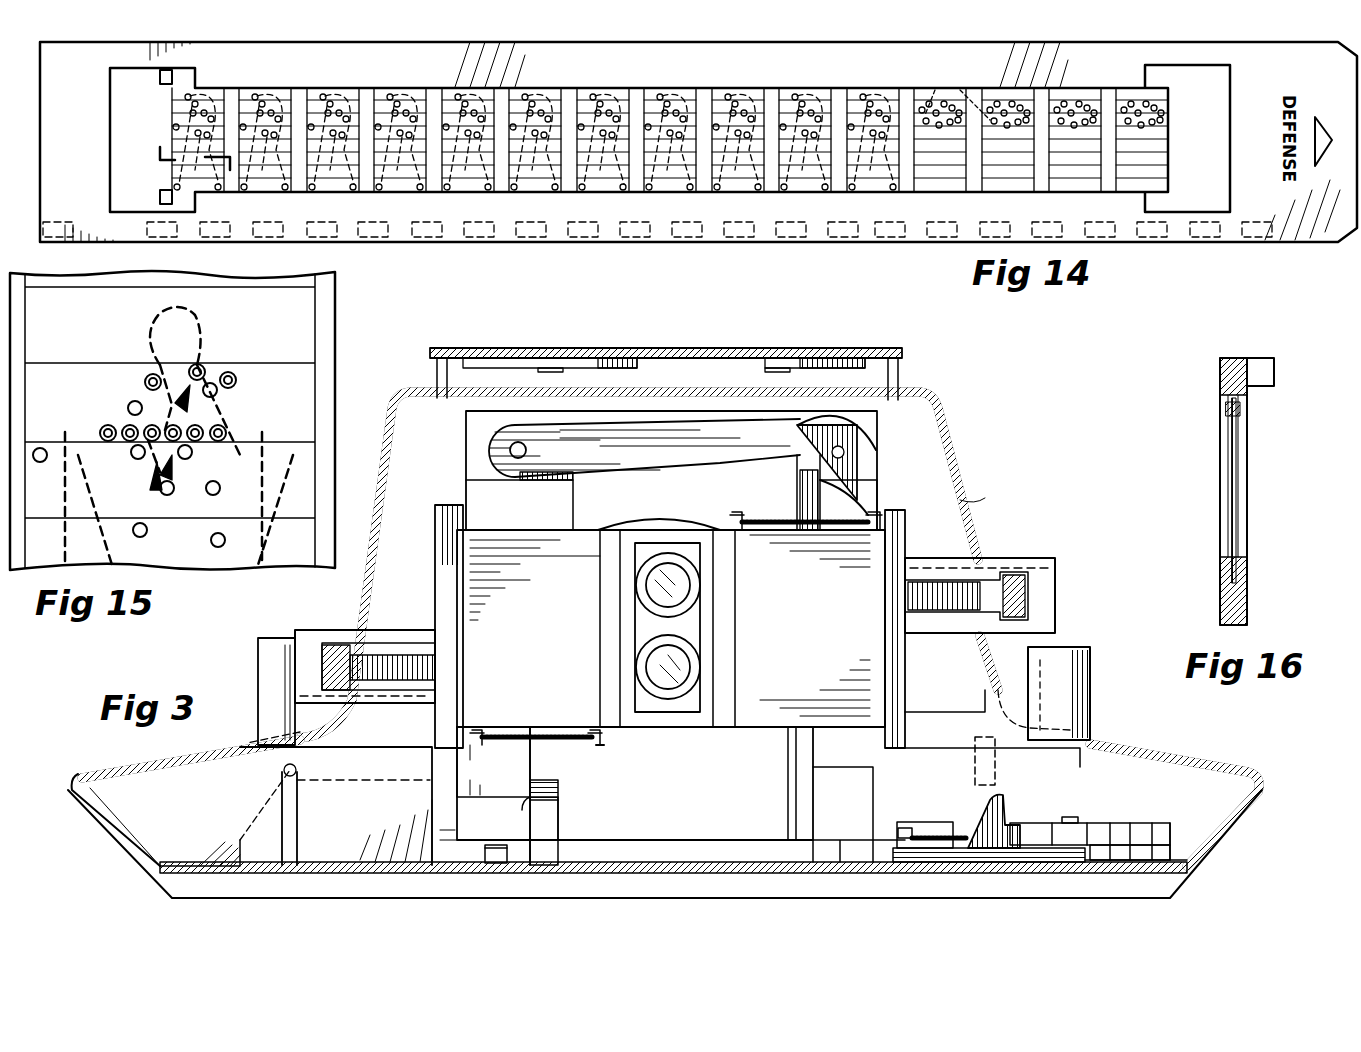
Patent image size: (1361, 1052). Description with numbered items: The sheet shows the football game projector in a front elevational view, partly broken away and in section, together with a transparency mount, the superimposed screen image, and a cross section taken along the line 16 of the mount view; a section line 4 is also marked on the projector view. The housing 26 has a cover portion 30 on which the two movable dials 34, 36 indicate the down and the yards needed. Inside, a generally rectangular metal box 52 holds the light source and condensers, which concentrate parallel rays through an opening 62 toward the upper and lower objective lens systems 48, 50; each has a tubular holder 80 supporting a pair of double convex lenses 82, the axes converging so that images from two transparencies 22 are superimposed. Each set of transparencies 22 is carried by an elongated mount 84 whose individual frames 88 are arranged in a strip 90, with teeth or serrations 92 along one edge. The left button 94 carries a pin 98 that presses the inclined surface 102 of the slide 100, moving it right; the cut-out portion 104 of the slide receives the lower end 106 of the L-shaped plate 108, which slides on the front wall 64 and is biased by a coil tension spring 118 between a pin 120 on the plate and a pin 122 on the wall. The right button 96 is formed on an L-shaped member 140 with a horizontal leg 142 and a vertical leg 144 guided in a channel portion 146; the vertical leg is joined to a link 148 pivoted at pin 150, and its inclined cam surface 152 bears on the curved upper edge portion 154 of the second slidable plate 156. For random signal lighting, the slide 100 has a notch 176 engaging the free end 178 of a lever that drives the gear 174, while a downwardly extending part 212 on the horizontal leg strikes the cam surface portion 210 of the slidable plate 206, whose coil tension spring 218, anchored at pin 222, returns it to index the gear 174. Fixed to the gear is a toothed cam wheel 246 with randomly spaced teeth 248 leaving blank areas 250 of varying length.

In FIG. 3, the section line 4- 4 is at (665, 936).
In FIG. 14, the section line 16- 16 is at (150, 22).
In FIG. 14, the film transparencies 22 is at (670, 70).
In FIG. 16, the film transparencies 22 is at (1220, 378).
In FIG. 3, the film transparencies 22 is at (315, 632).
In FIG. 3, the housing 26 is at (958, 466).
In FIG. 3, the cover portion 30 is at (968, 498).
In FIG. 3, the movable dial 34 is at (510, 366).
In FIG. 3, the movable dial 36 is at (734, 366).
In FIG. 3, the objective lens system 48 is at (748, 585).
In FIG. 3, the objective lens system 50 is at (752, 650).
In FIG. 3, the metal box 52 is at (888, 426).
In FIG. 3, the opening 62 is at (650, 522).
In FIG. 3, the front wall 64 is at (845, 633).
In FIG. 3, the tubular holder 80 is at (640, 658).
In FIG. 3, the double convex lenses 82 is at (650, 680).
In FIG. 14, the mount 84 is at (1065, 60).
In FIG. 14, the frames 88 is at (990, 90).
In FIG. 14, the strip 90 is at (767, 90).
In FIG. 16, the strip 90 is at (1230, 476).
In FIG. 16, the teeth or serrations 92 is at (1262, 365).
In FIG. 3, the button 94 is at (262, 650).
In FIG. 3, the button 96 is at (1078, 650).
In FIG. 3, the pin 98 is at (298, 768).
In FIG. 3, the slide 100 is at (478, 843).
In FIG. 3, the inclined surface 102 is at (232, 845).
In FIG. 3, the cut-out portion 104 is at (558, 802).
In FIG. 3, the lower end 106 is at (505, 788).
In FIG. 3, the L-shaped plate 108 is at (532, 750).
In FIG. 3, the coil tension spring 118 is at (557, 733).
In FIG. 3, the pin 120 is at (600, 744).
In FIG. 3, the pin 122 is at (478, 740).
In FIG. 3, the L-shaped member 140 is at (920, 712).
In FIG. 3, the horizontal leg 142 is at (962, 720).
In FIG. 3, the vertical leg 144 is at (868, 455).
In FIG. 3, the channel portion 146 is at (792, 800).
In FIG. 3, the link 148 is at (662, 462).
In FIG. 3, the pin 150 is at (517, 458).
In FIG. 3, the cam surface 152 is at (822, 476).
In FIG. 3, the curved upper edge portion 154 is at (866, 508).
In FIG. 3, the second slidable plate 156 is at (832, 522).
In FIG. 3, the gear 174 is at (1190, 830).
In FIG. 3, the notch 176 is at (500, 862).
In FIG. 3, the free end 178 is at (490, 862).
In FIG. 3, the slidable plate 206 is at (1045, 862).
In FIG. 3, the cam surface portion 210 is at (990, 825).
In FIG. 3, the downwardly extending part 212 is at (1018, 790).
In FIG. 3, the coil tension spring 218 is at (940, 860).
In FIG. 3, the pin 222 is at (905, 828).
In FIG. 3, the toothed cam wheel 246 is at (1185, 805).
In FIG. 3, the teeth 248 is at (1148, 825).
In FIG. 3, the blank areas 250 is at (1042, 825).